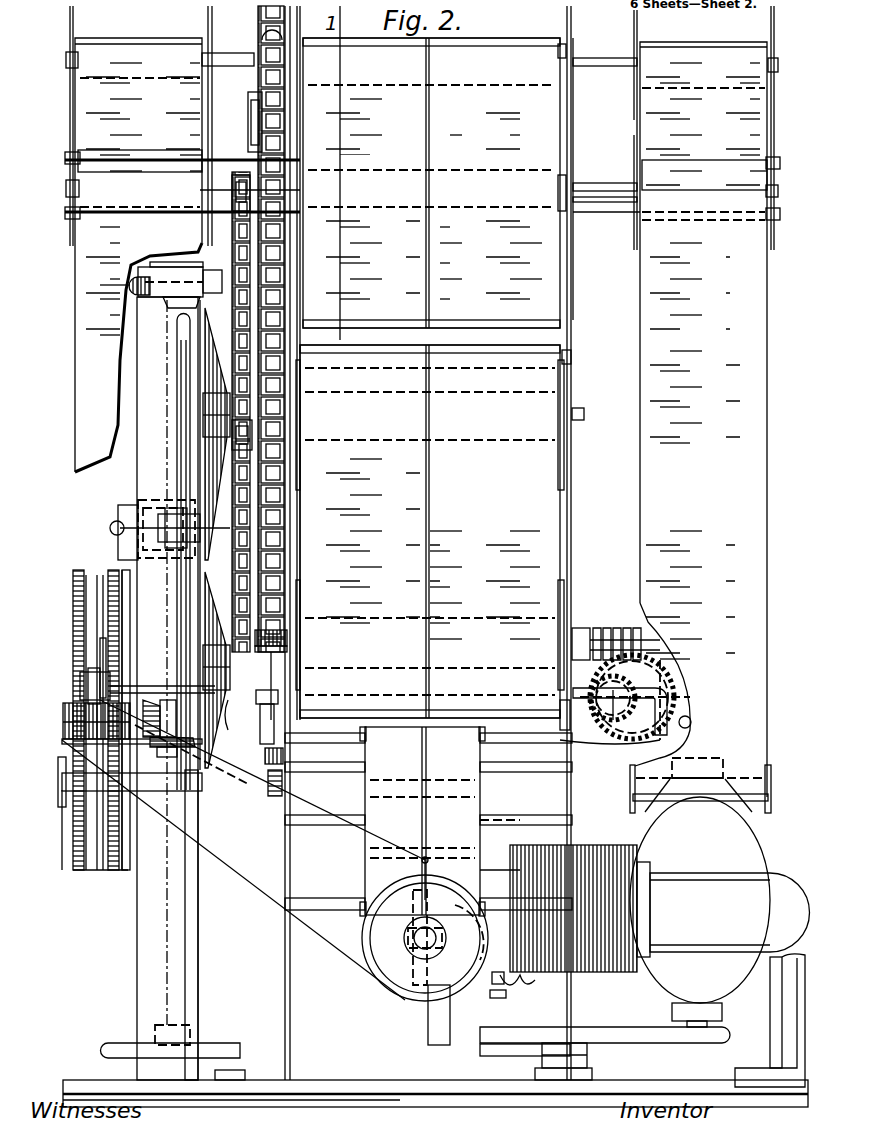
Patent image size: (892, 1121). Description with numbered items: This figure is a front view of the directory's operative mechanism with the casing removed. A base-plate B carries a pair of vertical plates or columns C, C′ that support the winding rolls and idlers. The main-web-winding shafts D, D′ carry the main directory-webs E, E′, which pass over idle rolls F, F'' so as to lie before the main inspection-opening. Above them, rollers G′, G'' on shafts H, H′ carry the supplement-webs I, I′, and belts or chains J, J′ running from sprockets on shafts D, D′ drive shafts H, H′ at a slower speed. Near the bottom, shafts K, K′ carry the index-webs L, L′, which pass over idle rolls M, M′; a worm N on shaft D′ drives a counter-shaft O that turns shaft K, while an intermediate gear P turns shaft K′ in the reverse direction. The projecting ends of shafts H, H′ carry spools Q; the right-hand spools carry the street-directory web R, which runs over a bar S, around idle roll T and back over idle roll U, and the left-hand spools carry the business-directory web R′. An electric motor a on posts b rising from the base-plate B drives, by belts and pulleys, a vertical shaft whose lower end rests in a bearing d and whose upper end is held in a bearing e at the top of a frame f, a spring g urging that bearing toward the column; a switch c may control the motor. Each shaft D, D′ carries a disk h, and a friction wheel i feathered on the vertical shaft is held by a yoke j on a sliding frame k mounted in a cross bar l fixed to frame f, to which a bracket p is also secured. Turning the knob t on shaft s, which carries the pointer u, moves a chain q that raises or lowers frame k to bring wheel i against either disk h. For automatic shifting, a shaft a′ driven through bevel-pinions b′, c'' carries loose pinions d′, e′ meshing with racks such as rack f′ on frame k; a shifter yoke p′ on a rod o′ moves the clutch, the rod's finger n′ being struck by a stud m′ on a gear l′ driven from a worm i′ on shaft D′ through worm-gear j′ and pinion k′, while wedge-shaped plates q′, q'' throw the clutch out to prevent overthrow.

The web or band R′ is at (138, 255).
The spool or roll Q is at (67, 52).
The belt or chain J is at (258, 329).
The belt or chain J′ is at (252, 445).
The web I is at (431, 173).
The web I′ is at (494, 183).
The roller G′ is at (560, 48).
The bracket G'' is at (547, 209).
The shaft H is at (605, 51).
The shaft H′ is at (606, 188).
The web or band R is at (701, 419).
The bar S is at (780, 163).
The idle roll U is at (780, 216).
The web E is at (430, 531).
The web E′ is at (494, 531).
The idle roll F is at (578, 346).
The main-web-winding shaft D is at (583, 412).
The frame or supporting member f is at (171, 688).
The bearing e is at (208, 272).
The spring g is at (121, 282).
The disk or plate h is at (205, 372).
The friction wheel or pulley i is at (204, 528).
The U-shaped member or yoke j is at (136, 502).
The sliding frame k is at (120, 554).
The rack f′ is at (75, 608).
The wedge-shaped plate q′ is at (100, 650).
The shifter arm or yoke p′ is at (82, 682).
The cross plate or bar l is at (128, 690).
The bracket p is at (64, 708).
The shaft a′ is at (62, 722).
The pinion d′ is at (75, 744).
The bar q'' is at (122, 813).
The bevel-pinion b′ is at (165, 742).
The pinion c'' is at (199, 749).
The pinion e′ is at (123, 598).
The chain q is at (243, 850).
The worm N is at (265, 630).
The counter-shaft O is at (256, 712).
The rod o′ is at (228, 724).
The intermediate gear P is at (270, 800).
The idle roll M is at (362, 733).
The shaft K is at (318, 772).
The shaft K′ is at (428, 832).
The idle roll M′ is at (362, 898).
The index-web L is at (440, 821).
The index-web L′ is at (450, 817).
The pointer u is at (422, 862).
The milled head or knob t is at (425, 938).
The shaft s is at (412, 938).
The electric motor a is at (645, 926).
The idle roll T is at (772, 785).
The post b is at (772, 1005).
The bearing d is at (216, 1094).
The base-plate B is at (310, 1094).
The plate or column C is at (283, 1004).
The switch c is at (200, 963).
The column C′ is at (572, 1004).
The main-web-winding shaft D′ is at (586, 628).
The worm i′ is at (620, 628).
The gear l′ is at (631, 697).
The pinion k′ is at (608, 705).
The worm-gear j′ is at (603, 732).
The finger n′ is at (610, 751).
The pin or stud m′ is at (692, 722).
The bracket F'' is at (551, 731).